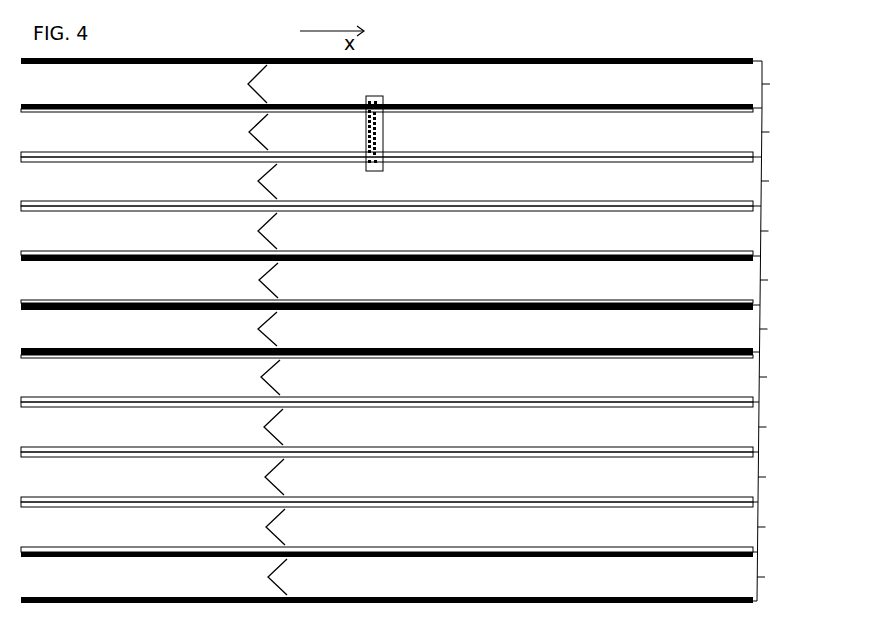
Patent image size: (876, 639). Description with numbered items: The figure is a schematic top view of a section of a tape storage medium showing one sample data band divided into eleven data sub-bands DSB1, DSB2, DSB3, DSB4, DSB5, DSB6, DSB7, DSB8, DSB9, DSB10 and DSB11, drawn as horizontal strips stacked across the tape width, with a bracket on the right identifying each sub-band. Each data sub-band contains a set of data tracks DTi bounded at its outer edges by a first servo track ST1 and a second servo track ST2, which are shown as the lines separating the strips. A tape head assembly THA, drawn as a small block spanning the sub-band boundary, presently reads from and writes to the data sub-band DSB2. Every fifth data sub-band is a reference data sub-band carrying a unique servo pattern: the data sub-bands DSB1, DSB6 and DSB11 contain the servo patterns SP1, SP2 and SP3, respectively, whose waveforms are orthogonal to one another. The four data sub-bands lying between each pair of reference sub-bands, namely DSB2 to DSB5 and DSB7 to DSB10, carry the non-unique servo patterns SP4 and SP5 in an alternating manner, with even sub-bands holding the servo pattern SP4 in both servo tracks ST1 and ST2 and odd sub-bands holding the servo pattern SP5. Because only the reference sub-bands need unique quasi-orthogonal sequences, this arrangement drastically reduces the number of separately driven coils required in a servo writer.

The data tracks DTi is at (431, 330).
The first servo track ST1 is at (585, 67).
The second servo track ST2 is at (690, 105).
The tape head assembly THA is at (383, 133).
The servo pattern SP1 is at (235, 84).
The servo pattern SP2 is at (246, 329).
The servo pattern SP3 is at (255, 577).
The servo pattern SP4 is at (245, 304).
The servo pattern SP5 is at (249, 354).
The data sub-band DSB1 is at (426, 83).
The data sub-band DSB2 is at (426, 116).
The data sub-band DSB3 is at (426, 179).
The data sub-band DSB4 is at (426, 228).
The data sub-band DSB5 is at (426, 278).
The data sub-band DSB6 is at (426, 326).
The data sub-band DSB7 is at (426, 375).
The data sub-band DSB8 is at (426, 424).
The data sub-band DSB9 is at (425, 474).
The data sub-band DSB10 is at (431, 524).
The data sub-band DSB11 is at (431, 575).